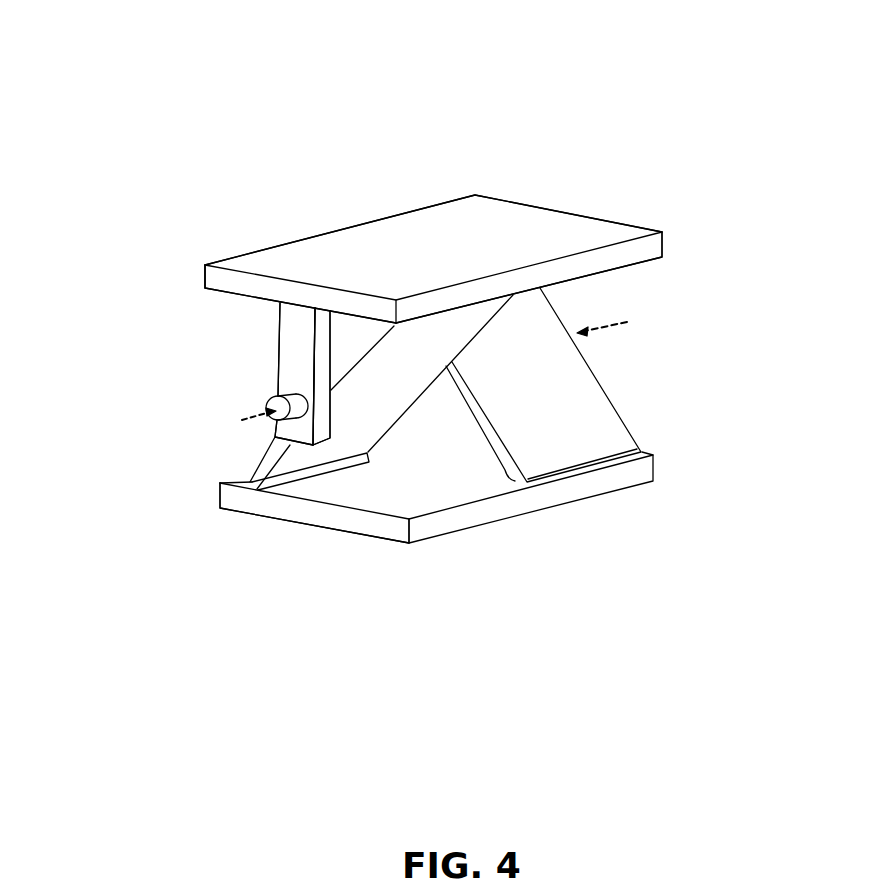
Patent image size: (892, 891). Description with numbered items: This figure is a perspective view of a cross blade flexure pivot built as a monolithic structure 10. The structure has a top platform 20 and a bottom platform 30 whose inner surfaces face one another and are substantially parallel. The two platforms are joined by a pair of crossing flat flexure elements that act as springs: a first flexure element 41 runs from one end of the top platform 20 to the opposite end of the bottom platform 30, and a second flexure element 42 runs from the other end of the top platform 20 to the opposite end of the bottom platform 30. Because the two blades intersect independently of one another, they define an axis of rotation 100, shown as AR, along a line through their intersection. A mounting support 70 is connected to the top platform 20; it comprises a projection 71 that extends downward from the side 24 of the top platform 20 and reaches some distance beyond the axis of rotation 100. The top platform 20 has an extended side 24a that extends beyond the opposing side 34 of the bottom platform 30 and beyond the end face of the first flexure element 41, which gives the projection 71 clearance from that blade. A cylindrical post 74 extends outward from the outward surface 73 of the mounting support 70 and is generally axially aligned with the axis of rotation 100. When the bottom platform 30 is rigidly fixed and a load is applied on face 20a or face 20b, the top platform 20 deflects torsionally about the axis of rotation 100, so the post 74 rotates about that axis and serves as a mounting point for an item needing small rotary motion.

The monolithic structure 10 is at (195, 465).
The top platform 20 is at (558, 230).
The face of top platform 20a is at (645, 248).
The face of top platform 20b is at (423, 202).
The side of top platform 24 is at (255, 283).
The extended side of top platform 24a is at (224, 251).
The bottom platform 30 is at (428, 503).
The opposing side of bottom platform 34 is at (390, 528).
The first flexure element 41 is at (393, 400).
The second flexure element 42 is at (598, 420).
The mounting support 70 is at (239, 368).
The projection 71 is at (322, 402).
The outward surface of mounting support 73 is at (293, 360).
The cylindrical post 74 is at (272, 404).
The axis of rotation 100 is at (613, 322).